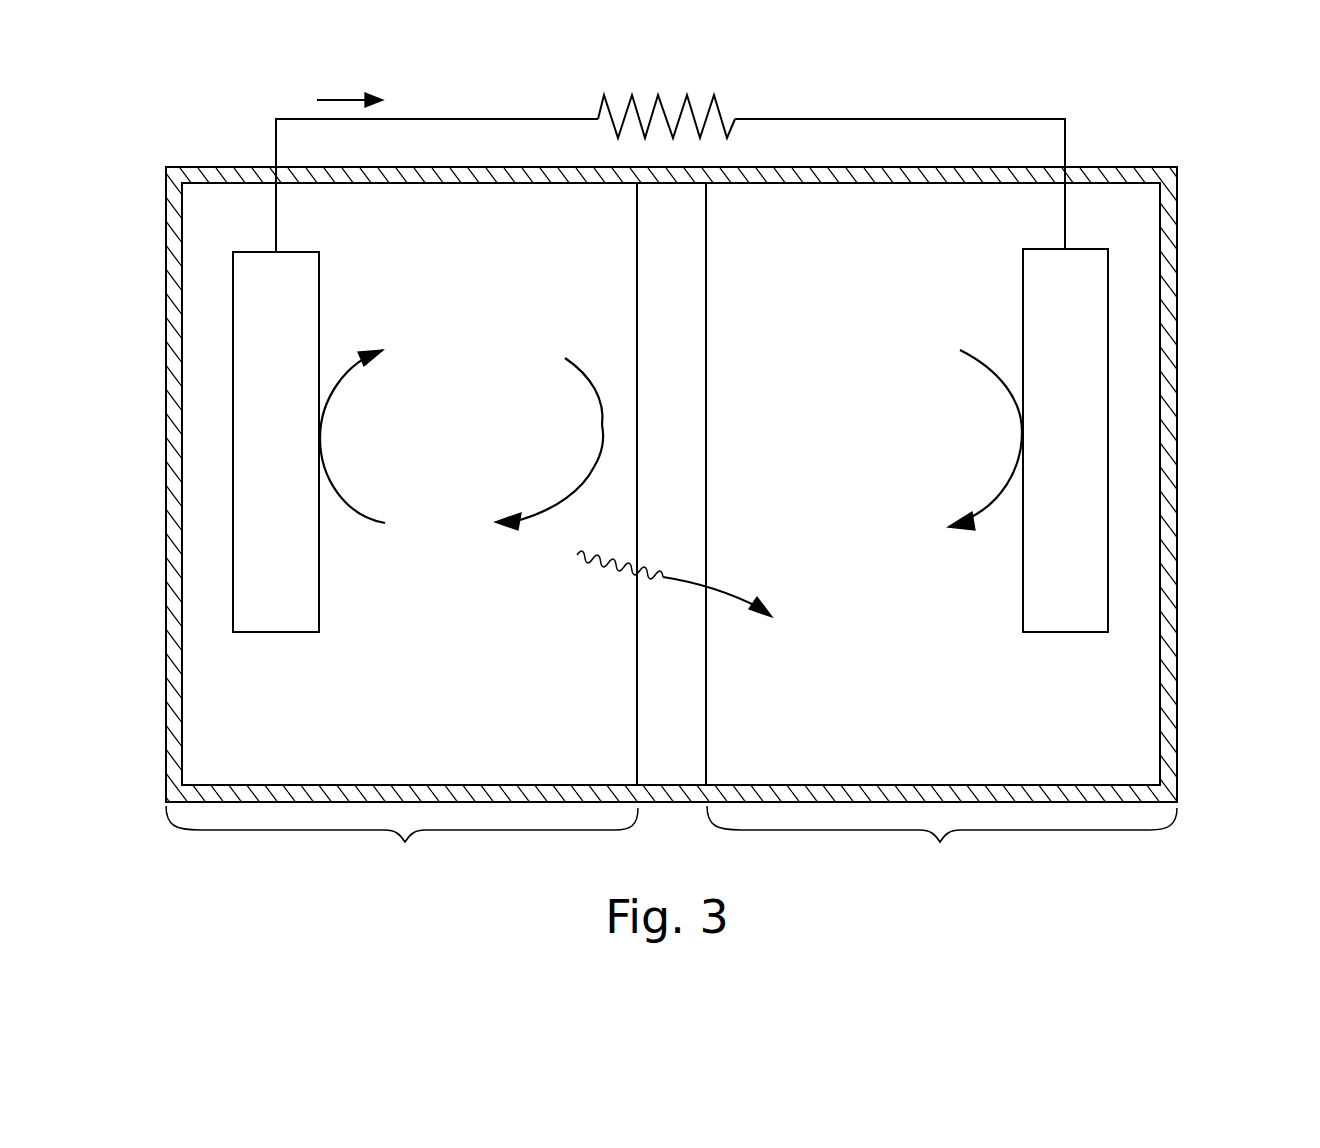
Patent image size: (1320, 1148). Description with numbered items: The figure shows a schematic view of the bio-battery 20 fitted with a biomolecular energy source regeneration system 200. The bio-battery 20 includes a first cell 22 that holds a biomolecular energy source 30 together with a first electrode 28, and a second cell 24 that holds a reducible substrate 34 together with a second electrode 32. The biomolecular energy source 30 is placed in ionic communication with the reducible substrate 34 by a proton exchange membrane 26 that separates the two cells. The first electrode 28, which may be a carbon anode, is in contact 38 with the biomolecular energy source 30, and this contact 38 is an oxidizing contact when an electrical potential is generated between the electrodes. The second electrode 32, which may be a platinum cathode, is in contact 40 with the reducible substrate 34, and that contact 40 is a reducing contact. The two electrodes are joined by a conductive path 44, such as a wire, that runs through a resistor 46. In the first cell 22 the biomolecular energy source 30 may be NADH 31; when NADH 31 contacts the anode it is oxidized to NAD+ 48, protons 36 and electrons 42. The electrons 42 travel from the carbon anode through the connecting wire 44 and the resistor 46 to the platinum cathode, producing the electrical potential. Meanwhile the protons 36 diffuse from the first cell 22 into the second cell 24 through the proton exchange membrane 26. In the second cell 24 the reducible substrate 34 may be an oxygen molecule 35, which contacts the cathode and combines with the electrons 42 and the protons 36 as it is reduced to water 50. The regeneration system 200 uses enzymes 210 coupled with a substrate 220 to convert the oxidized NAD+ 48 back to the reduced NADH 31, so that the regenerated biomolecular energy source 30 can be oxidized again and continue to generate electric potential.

The bio-battery 20 is at (1105, 884).
The first cell 22 is at (402, 528).
The second cell 24 is at (941, 528).
The proton exchange membrane 26 is at (692, 213).
The first electrode 28 is at (267, 588).
The biomolecular energy source 30 is at (393, 710).
The NADH 31 is at (437, 543).
The second electrode 32 is at (1072, 577).
The reducible substrate 34 is at (1098, 735).
The oxygen molecule 35 is at (922, 317).
The protons 36 is at (500, 327).
The contact 38 is at (318, 438).
The contact 40 is at (1022, 433).
The electrons 42 is at (295, 83).
The conductive path 44 is at (1067, 140).
The resistor 46 is at (633, 102).
The NAD+ 48 is at (428, 327).
The water 50 is at (912, 560).
The biomolecular energy source regeneration system 200 is at (580, 490).
The enzymes 210 is at (602, 437).
The substrate 220 is at (582, 373).